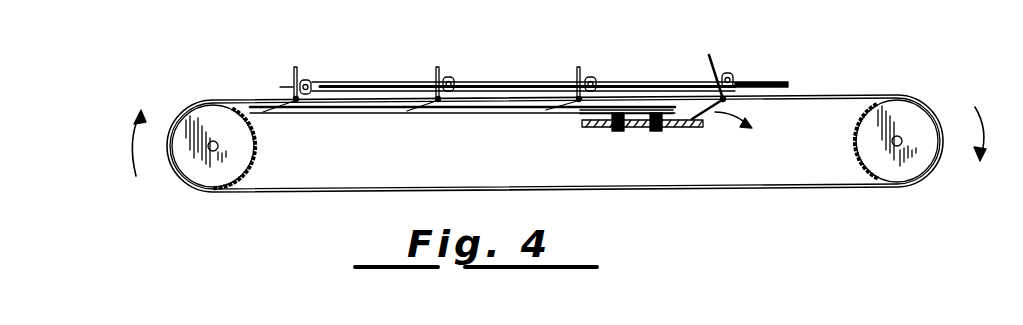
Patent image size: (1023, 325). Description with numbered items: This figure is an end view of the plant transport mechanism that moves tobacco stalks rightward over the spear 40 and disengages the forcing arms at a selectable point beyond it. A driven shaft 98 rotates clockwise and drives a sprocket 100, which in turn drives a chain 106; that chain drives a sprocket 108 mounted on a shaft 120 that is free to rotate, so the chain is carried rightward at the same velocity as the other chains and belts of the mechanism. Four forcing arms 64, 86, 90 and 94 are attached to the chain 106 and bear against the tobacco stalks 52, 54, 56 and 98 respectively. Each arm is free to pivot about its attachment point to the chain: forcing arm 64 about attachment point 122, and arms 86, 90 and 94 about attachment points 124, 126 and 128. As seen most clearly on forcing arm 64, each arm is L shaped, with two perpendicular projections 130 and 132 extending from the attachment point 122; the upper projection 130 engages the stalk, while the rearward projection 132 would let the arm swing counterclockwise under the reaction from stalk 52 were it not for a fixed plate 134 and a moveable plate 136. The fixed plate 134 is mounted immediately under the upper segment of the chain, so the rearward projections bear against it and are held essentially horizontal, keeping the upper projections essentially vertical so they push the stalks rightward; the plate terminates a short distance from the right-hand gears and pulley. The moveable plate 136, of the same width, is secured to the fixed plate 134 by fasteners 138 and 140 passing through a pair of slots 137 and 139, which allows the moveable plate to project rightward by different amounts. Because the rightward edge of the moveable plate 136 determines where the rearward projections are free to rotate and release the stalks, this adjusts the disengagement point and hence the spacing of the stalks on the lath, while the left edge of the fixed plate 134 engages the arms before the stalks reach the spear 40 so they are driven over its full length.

The spear 40 is at (378, 81).
The tobacco stalk 52 is at (735, 78).
The tobacco stalk 54 is at (597, 80).
The tobacco stalk 56 is at (456, 80).
The forcing arm 64 is at (709, 55).
The forcing arm 86 is at (578, 66).
The forcing arm 90 is at (437, 66).
The forcing arm 94 is at (294, 66).
The driven shaft 98 is at (311, 83).
The sprocket 100 is at (905, 160).
The chain 106 is at (770, 190).
The sprocket 108 is at (200, 162).
The shaft 120 is at (212, 141).
The attachment point 122 is at (723, 100).
The attachment point 124 is at (580, 111).
The attachment point 126 is at (440, 104).
The attachment point 128 is at (297, 104).
The upper projection 130 is at (717, 73).
The rearward projection 132 is at (710, 105).
The fixed plate 134 is at (367, 115).
The moveable plate 136 is at (708, 121).
The slot 137 is at (672, 126).
The fastener 138 is at (655, 132).
The slot 139 is at (603, 123).
The fastener 140 is at (618, 132).